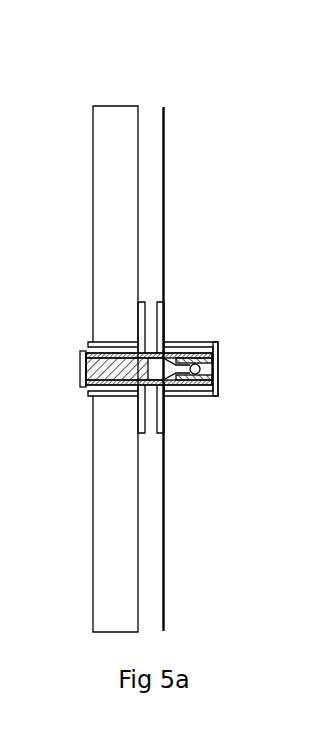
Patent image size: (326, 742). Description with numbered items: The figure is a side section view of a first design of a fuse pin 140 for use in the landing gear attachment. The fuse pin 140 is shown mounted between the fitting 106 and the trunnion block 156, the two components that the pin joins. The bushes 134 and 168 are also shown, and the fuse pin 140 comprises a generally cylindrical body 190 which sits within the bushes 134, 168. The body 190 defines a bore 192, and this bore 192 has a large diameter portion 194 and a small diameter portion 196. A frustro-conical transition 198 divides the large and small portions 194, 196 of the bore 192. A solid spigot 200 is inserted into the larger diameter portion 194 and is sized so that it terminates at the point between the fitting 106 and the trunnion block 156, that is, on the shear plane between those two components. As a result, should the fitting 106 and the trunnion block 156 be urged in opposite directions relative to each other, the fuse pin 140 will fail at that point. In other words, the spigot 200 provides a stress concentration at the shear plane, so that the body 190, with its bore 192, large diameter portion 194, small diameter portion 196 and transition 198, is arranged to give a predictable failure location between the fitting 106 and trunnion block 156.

The fitting 106 is at (118, 130).
The trunnion block 156 is at (167, 130).
The fuse pin 140 is at (165, 345).
The generally cylindrical body 190 is at (123, 350).
The bush 134 is at (88, 393).
The bush 168 is at (218, 391).
The large diameter portion 194 is at (116, 386).
The solid spigot 200 is at (82, 361).
The frustro-conical transition 198 is at (168, 372).
The small diameter portion 196 is at (178, 352).
The bore 192 is at (208, 366).